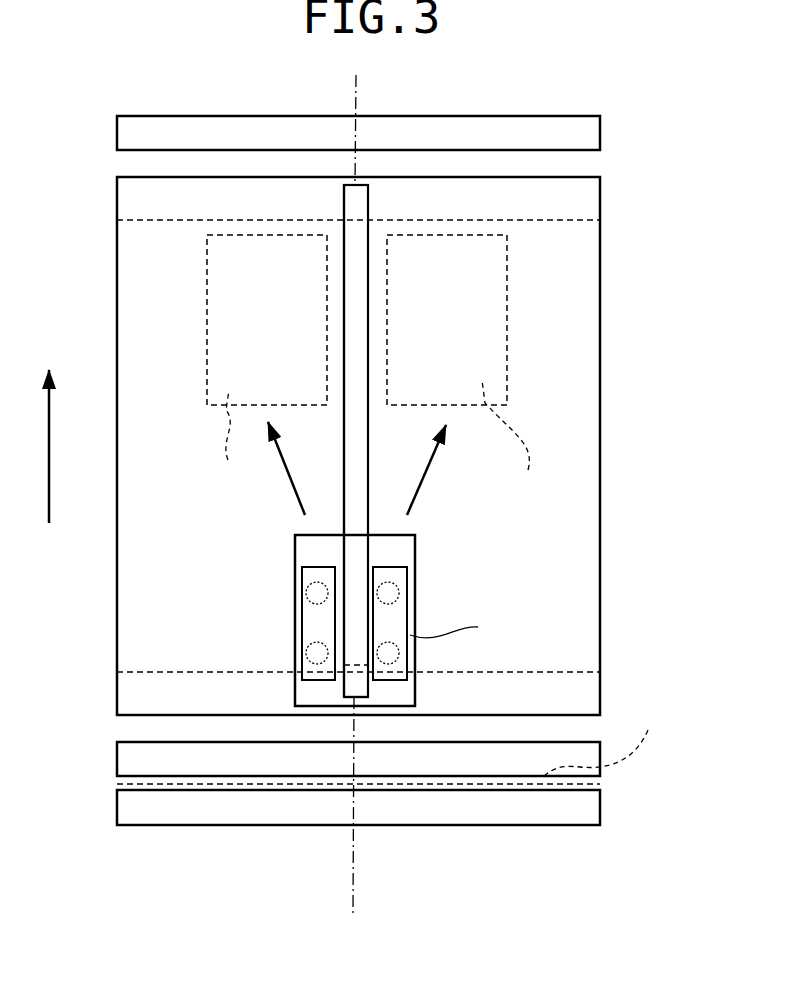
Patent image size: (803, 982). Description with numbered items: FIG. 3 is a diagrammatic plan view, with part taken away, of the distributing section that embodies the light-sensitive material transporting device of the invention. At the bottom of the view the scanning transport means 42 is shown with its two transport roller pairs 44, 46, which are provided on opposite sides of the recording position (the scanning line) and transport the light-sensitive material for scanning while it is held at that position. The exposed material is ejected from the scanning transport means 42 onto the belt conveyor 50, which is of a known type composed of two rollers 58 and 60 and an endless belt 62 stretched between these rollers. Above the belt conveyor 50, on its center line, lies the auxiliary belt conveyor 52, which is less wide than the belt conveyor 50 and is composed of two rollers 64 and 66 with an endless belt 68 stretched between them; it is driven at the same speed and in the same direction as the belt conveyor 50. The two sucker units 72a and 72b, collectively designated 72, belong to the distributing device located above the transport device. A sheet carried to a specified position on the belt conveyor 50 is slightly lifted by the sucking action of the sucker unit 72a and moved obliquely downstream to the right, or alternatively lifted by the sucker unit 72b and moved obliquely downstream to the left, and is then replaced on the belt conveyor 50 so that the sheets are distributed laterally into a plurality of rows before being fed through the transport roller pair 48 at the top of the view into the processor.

The scanning transport means 42 is at (614, 786).
The transport roller pair 44 is at (133, 806).
The transport roller pair 46 is at (130, 752).
The transport roller pair 48 is at (582, 135).
The belt conveyor 50 is at (421, 485).
The auxiliary belt conveyor 52 is at (334, 194).
The roller 58 is at (560, 702).
The roller 60 is at (565, 200).
The endless belt 62 is at (562, 531).
The roller 64 is at (372, 700).
The roller 66 is at (370, 194).
The endless belt 68 is at (355, 268).
The sucker units 72 is at (363, 584).
The sucker unit 72a is at (390, 622).
The sucker unit 72b is at (313, 622).